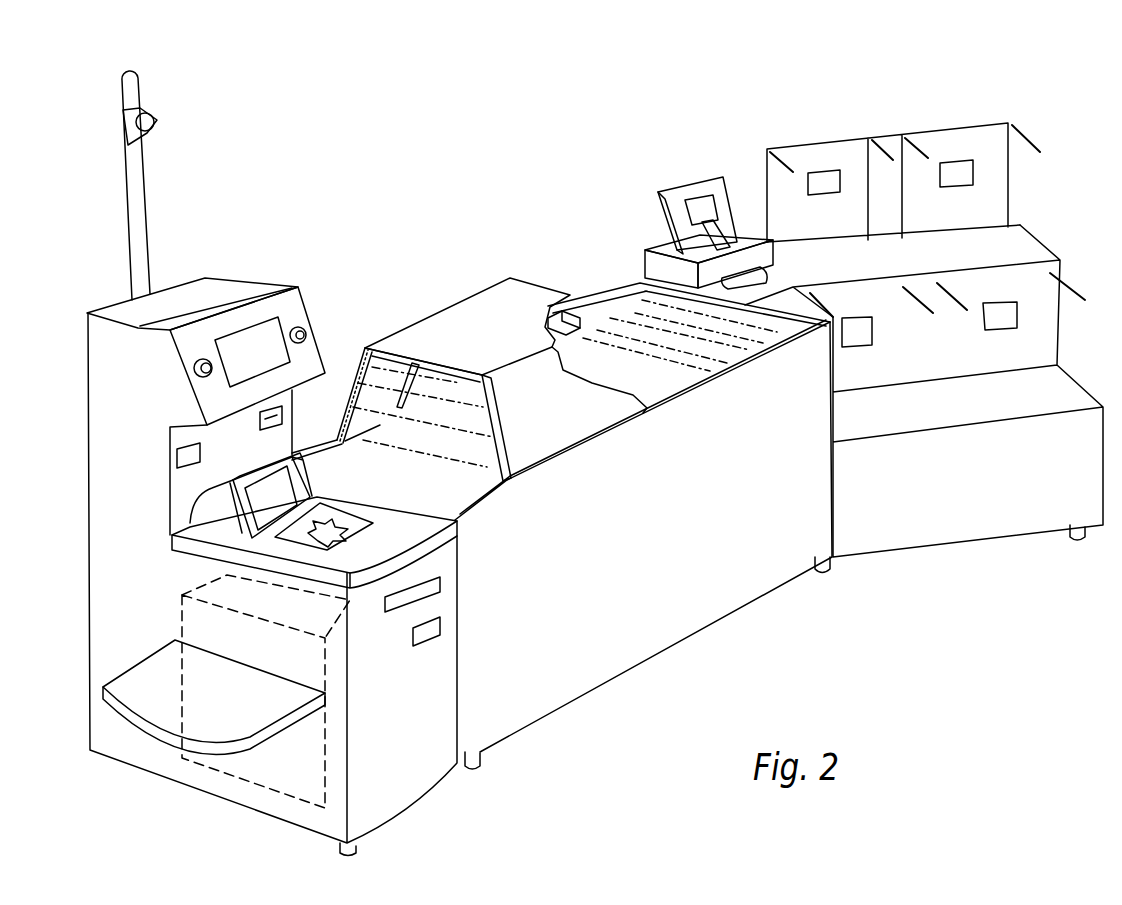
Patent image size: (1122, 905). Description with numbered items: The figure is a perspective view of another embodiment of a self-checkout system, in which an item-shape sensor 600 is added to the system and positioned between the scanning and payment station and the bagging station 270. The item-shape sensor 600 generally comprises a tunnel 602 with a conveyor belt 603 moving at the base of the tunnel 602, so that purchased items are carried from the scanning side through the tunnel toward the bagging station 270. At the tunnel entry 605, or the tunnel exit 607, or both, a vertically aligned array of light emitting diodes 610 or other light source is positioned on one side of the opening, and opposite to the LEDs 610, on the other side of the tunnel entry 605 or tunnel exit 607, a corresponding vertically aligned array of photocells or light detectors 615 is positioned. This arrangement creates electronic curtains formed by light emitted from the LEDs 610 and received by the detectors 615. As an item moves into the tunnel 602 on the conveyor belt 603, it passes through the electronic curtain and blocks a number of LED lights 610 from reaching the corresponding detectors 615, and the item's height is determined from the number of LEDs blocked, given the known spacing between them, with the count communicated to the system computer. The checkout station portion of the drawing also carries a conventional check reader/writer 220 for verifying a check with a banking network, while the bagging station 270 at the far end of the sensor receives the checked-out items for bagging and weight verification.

The item-shape sensor 600 is at (550, 214).
The tunnel 602 is at (497, 300).
The conveyor belt 603 is at (435, 498).
The tunnel entry 605 is at (395, 365).
The tunnel exit 607 is at (570, 302).
The light emitting diodes 610 is at (358, 368).
The light detectors 615 is at (478, 465).
The check reader/writer 220 is at (775, 262).
The bagging station 270 is at (1030, 105).